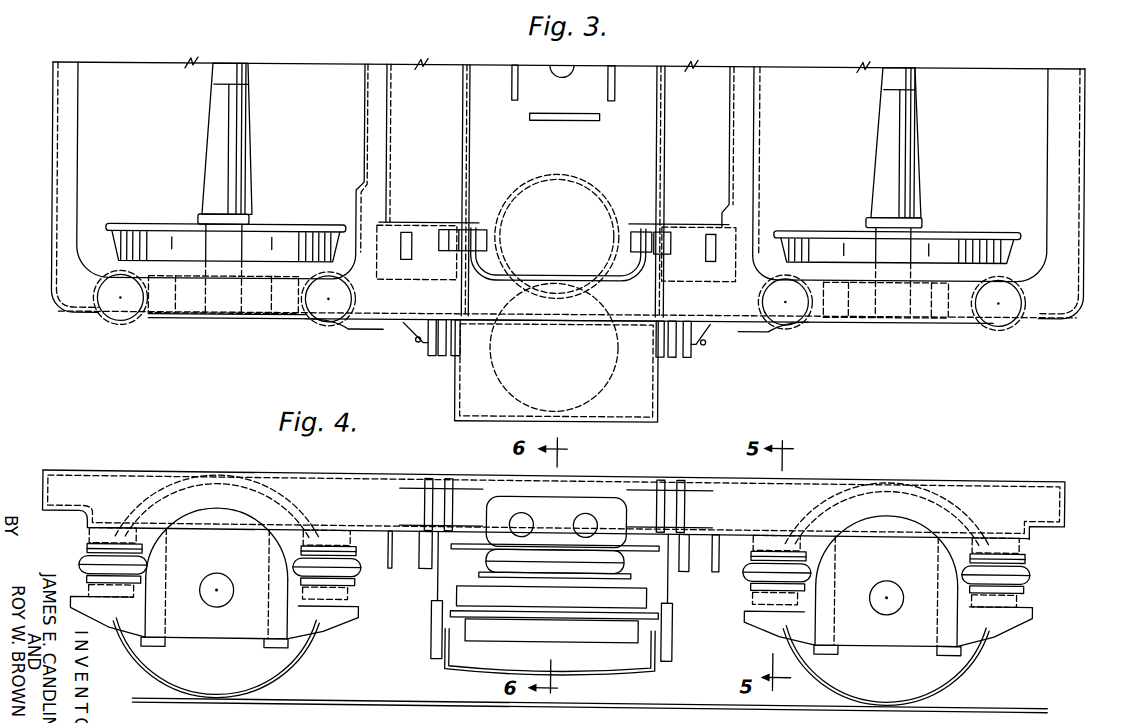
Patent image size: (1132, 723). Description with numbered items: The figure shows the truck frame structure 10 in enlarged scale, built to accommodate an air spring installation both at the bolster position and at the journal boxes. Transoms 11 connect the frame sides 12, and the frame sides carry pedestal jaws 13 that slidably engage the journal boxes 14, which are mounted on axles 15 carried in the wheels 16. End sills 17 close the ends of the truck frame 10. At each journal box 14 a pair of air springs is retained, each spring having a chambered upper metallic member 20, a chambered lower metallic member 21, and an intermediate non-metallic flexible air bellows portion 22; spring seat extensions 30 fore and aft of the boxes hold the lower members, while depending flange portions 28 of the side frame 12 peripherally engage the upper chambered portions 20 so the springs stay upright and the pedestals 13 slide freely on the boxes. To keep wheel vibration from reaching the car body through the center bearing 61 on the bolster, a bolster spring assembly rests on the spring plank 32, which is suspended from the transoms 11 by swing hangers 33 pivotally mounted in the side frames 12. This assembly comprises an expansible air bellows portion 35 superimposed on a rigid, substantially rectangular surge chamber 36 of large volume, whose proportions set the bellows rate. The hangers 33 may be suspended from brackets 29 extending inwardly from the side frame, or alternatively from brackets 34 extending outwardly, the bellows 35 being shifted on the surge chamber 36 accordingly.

In FIG. 3, the truck frame structure 10 is at (88, 177).
In FIG. 3, the transoms 11 is at (360, 103).
In FIG. 3, the frame sides 12 is at (370, 320).
In FIG. 4, the frame sides 12 is at (301, 470).
In FIG. 3, the pedestal jaws 13 is at (160, 281).
In FIG. 4, the pedestal jaws 13 is at (270, 646).
In FIG. 4, the journal boxes 14 is at (904, 646).
In FIG. 3, the axles 15 is at (249, 161).
In FIG. 4, the axles 15 is at (227, 579).
In FIG. 3, the wheels 16 is at (153, 222).
In FIG. 4, the wheels 16 is at (145, 674).
In FIG. 3, the end sills 17 is at (1085, 138).
In FIG. 4, the upper metallic member 20 is at (88, 548).
In FIG. 4, the lower metallic member 21 is at (90, 580).
In FIG. 3, the air bellows portion 22 is at (1002, 328).
In FIG. 4, the air bellows portion 22 is at (83, 565).
In FIG. 4, the depending flange portions 28 is at (92, 535).
In FIG. 3, the brackets 29 is at (672, 220).
In FIG. 4, the spring seat extensions 30 is at (86, 601).
In FIG. 3, the spring plank 32 is at (498, 416).
In FIG. 4, the spring plank 32 is at (505, 630).
In FIG. 4, the swing hangers 33 is at (436, 590).
In FIG. 3, the brackets 34 is at (655, 212).
In FIG. 4, the brackets 34 is at (452, 473).
In FIG. 3, the air bellows portion 35 is at (573, 177).
In FIG. 4, the air bellows portion 35 is at (620, 565).
In FIG. 4, the surge chamber 36 is at (456, 580).
In FIG. 3, the center bearing 61 is at (578, 70).